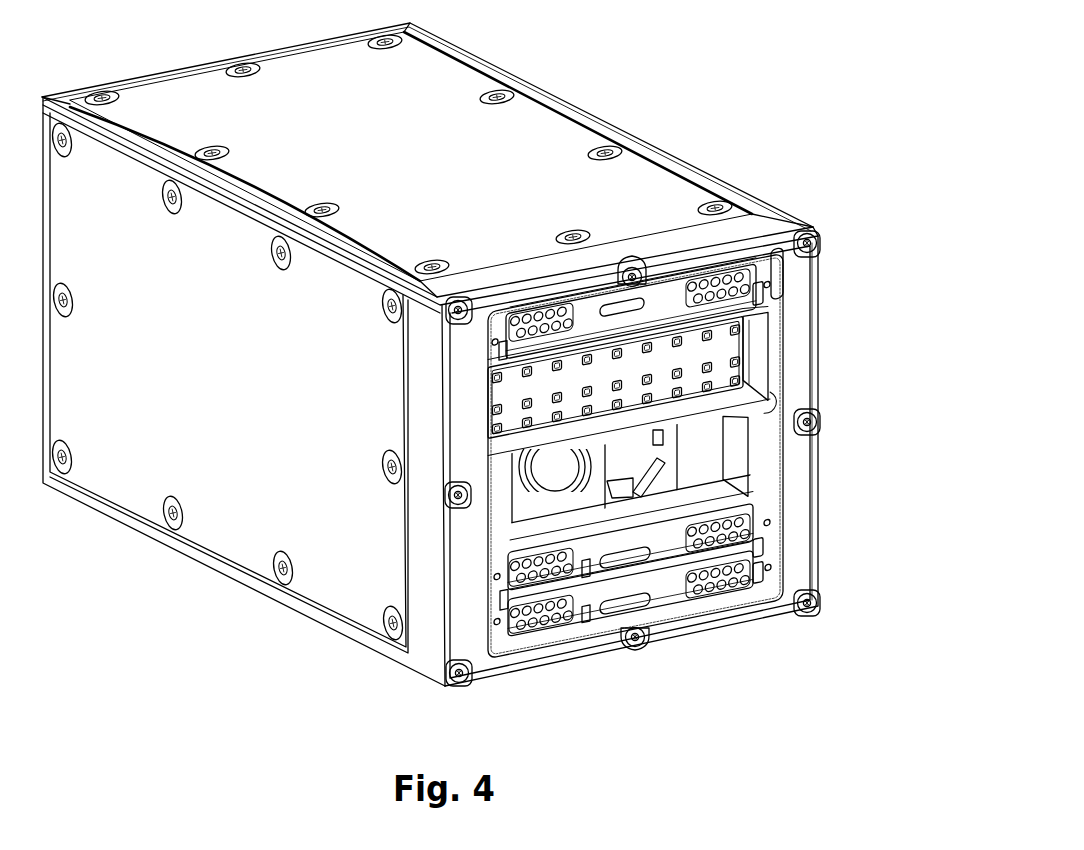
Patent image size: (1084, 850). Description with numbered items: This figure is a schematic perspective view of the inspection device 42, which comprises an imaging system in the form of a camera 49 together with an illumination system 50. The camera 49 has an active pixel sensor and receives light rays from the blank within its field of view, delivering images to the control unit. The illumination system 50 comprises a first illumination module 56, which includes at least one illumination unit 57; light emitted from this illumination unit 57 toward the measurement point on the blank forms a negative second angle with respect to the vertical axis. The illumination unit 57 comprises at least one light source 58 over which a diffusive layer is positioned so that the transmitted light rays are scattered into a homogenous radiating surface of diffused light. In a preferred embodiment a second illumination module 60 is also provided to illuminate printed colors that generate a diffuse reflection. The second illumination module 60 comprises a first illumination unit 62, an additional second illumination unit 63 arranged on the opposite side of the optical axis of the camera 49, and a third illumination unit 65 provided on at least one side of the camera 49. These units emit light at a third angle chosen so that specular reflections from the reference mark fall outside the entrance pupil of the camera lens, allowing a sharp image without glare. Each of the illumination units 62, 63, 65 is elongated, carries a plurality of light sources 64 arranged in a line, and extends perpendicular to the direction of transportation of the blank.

The inspection device 42 is at (640, 74).
The camera 49 is at (547, 463).
The illumination system 50 is at (903, 320).
The first illumination module 56 is at (760, 351).
The illumination unit 57 is at (490, 398).
The light source 58 is at (492, 380).
The second illumination module 60 is at (770, 519).
The first illumination unit 62 is at (679, 297).
The second illumination unit 63 is at (662, 593).
The light sources 64 is at (757, 288).
The third illumination unit 65 is at (687, 553).